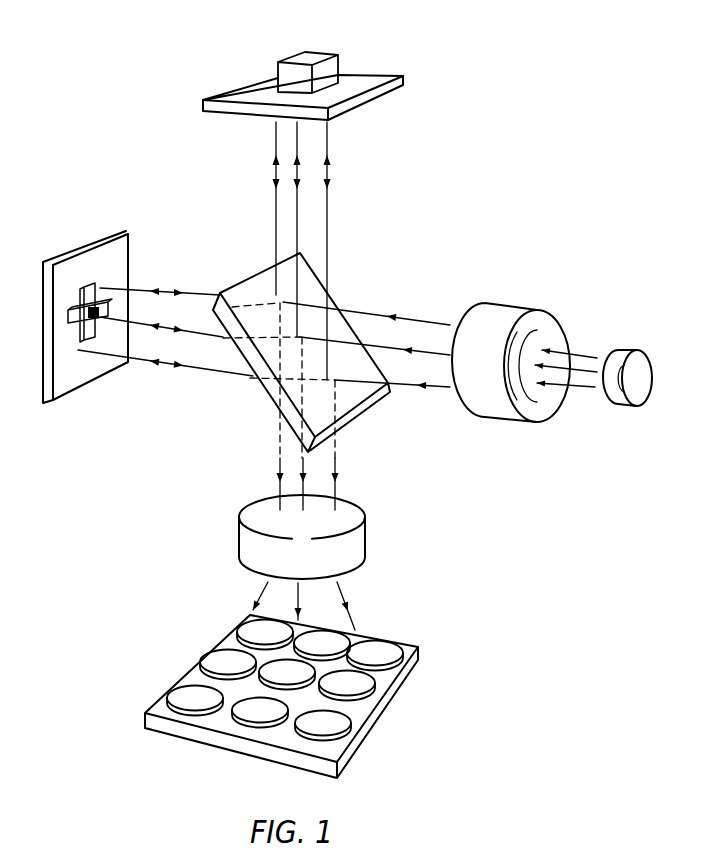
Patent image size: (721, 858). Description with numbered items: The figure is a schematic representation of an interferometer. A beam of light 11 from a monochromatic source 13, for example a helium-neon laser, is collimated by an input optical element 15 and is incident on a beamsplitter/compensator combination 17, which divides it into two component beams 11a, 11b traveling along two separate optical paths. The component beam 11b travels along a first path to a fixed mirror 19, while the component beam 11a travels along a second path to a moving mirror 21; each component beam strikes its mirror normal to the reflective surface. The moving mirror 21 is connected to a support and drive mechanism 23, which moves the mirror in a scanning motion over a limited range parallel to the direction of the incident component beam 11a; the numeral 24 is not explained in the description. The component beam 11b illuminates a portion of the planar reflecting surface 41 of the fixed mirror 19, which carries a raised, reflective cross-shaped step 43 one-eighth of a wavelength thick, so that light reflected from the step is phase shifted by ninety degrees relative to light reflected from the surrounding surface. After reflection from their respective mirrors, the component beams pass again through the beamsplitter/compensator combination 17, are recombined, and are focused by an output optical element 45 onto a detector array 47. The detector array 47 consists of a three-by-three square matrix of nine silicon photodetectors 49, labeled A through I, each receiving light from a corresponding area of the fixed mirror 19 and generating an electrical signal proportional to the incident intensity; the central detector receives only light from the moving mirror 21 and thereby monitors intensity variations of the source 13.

The beam of light 11 is at (587, 342).
The component beam 11a is at (343, 223).
The component beam 11b is at (197, 286).
The monochromatic source 13 is at (647, 350).
The input optical element 15 is at (540, 310).
The beamsplitter/compensator combination 17 is at (368, 407).
The fixed mirror 19 is at (62, 250).
The moving mirror 21 is at (203, 100).
The support and drive mechanism 23 is at (338, 58).
The reflective surface 24 is at (370, 102).
The planar reflecting surface 41 is at (82, 382).
The cross-shaped step 43 is at (93, 280).
The output optical element 45 is at (365, 535).
The detector array 47 is at (422, 682).
The silicon photodetectors 49 is at (385, 700).